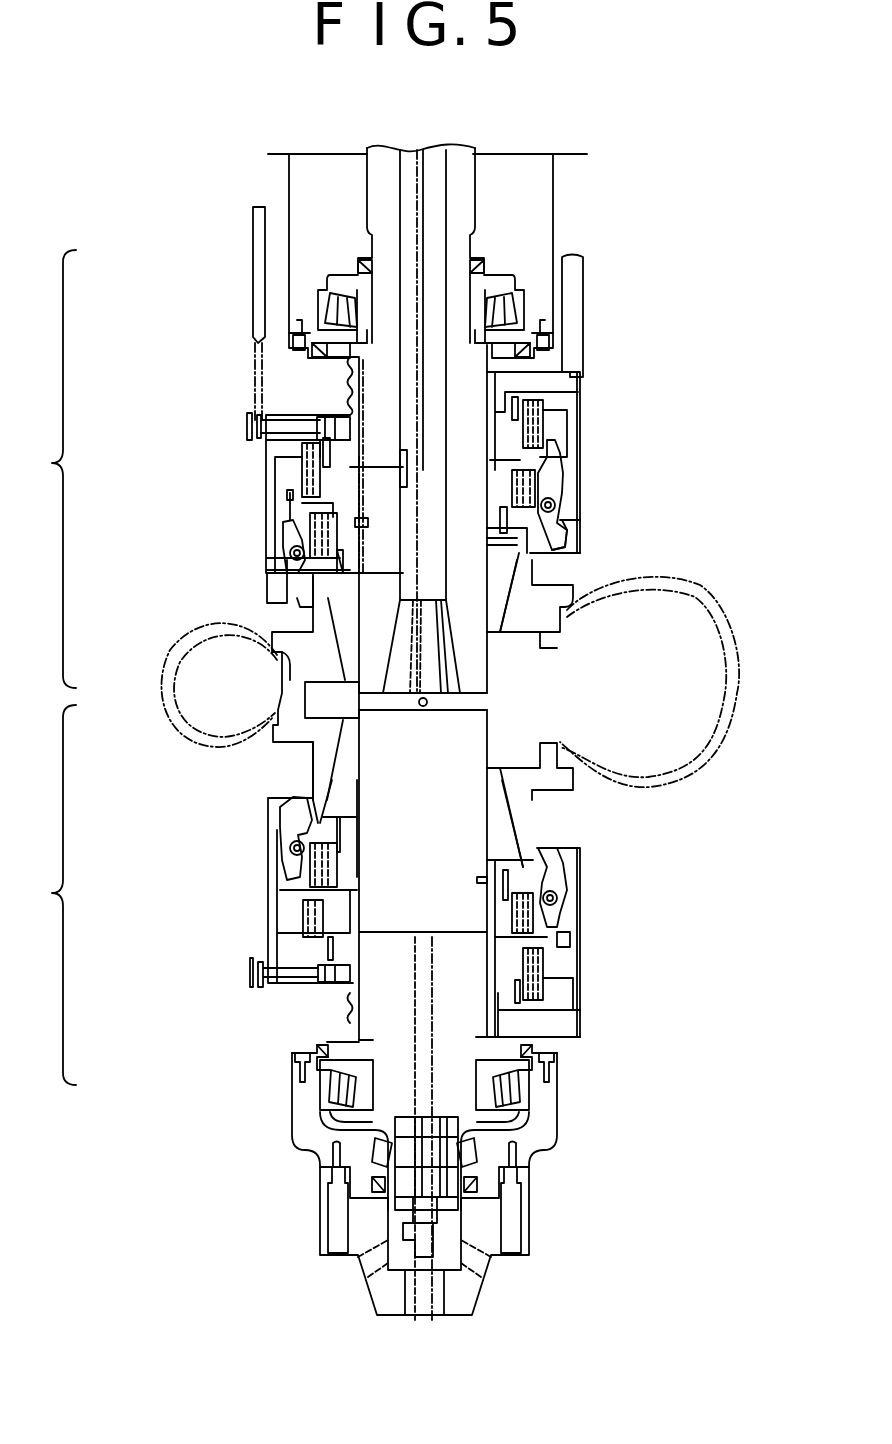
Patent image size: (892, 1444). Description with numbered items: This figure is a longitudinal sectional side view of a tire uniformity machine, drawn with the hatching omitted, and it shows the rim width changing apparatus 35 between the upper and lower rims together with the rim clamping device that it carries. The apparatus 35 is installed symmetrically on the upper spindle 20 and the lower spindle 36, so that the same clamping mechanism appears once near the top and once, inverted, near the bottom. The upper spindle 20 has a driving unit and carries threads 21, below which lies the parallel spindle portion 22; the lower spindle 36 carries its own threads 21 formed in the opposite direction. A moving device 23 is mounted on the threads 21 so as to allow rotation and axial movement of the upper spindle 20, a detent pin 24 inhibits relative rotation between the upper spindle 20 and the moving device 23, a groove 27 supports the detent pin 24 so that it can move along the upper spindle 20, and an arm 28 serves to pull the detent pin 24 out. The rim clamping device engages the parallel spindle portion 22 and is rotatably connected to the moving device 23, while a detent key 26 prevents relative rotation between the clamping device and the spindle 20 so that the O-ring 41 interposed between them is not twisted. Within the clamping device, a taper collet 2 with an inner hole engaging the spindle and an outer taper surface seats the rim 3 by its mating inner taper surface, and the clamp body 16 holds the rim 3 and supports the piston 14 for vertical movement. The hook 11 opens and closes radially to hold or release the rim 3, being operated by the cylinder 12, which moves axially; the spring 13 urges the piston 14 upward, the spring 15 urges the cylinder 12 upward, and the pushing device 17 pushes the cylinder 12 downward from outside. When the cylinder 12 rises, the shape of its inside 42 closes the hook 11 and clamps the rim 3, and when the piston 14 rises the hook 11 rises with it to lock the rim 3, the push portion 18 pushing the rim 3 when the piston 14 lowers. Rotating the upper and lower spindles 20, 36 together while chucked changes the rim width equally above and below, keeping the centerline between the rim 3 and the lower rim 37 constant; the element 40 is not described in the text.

The taper collet 2 is at (343, 636).
The rim 3 is at (297, 683).
The hook 11 is at (293, 607).
The cylinder 12 is at (300, 545).
The spring 13 is at (300, 540).
The piston 14 is at (312, 516).
The spring 15 is at (290, 457).
The clamp body 16 is at (310, 470).
The pushing device 17 is at (583, 288).
The push portion 18 is at (293, 578).
The upper spindle 20 is at (477, 679).
The threads 21 is at (348, 386).
The parallel spindle portion 22 is at (487, 497).
The moving device 23 is at (285, 412).
The detent pin 24 is at (265, 427).
The detent key 26 is at (370, 521).
The groove 27 is at (340, 360).
The arm 28 is at (253, 240).
The rim width changing apparatus 35 is at (42, 667).
The lower spindle 36 is at (480, 727).
The lower rim 37 is at (280, 730).
The stopper 40 is at (297, 600).
The O-ring 41 is at (362, 573).
The inside 42 is at (575, 535).